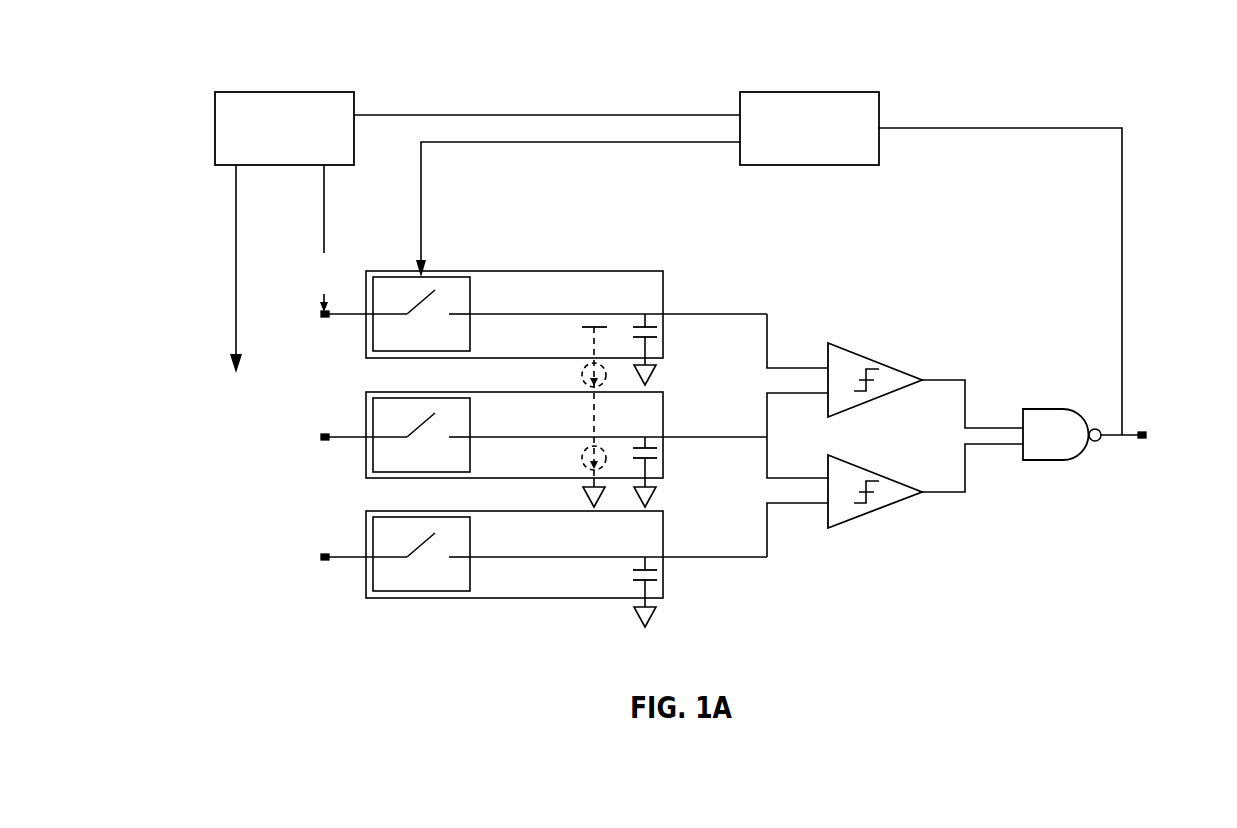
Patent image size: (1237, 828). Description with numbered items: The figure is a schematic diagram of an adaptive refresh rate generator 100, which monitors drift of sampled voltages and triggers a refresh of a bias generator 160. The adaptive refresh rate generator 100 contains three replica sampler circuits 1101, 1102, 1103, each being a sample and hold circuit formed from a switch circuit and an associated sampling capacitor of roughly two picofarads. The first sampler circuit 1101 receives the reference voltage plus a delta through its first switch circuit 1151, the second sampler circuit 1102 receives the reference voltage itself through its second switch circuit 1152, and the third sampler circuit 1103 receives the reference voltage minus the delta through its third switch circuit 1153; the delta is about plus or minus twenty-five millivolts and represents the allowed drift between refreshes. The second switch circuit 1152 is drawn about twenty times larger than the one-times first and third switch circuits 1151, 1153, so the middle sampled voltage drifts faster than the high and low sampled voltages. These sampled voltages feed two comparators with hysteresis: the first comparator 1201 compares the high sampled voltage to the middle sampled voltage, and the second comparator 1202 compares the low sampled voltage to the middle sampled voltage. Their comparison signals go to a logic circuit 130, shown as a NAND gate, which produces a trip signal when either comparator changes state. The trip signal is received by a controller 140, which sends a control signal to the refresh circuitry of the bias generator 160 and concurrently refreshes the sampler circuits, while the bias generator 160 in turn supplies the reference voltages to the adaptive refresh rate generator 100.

The adaptive refresh rate generator 100 is at (1108, 50).
The bias generator 160 is at (287, 92).
The controller 140 is at (810, 92).
The first sampler circuit 1101 is at (548, 307).
The second sampler circuit 1102 is at (548, 410).
The third sampler circuit 1103 is at (548, 576).
The first switch circuit 1151 is at (440, 271).
The second switch circuit 1152 is at (470, 427).
The third switch circuit 1153 is at (399, 579).
The first comparator 1201 is at (840, 352).
The second comparator 1202 is at (840, 464).
The logic circuit 130 is at (1040, 409).